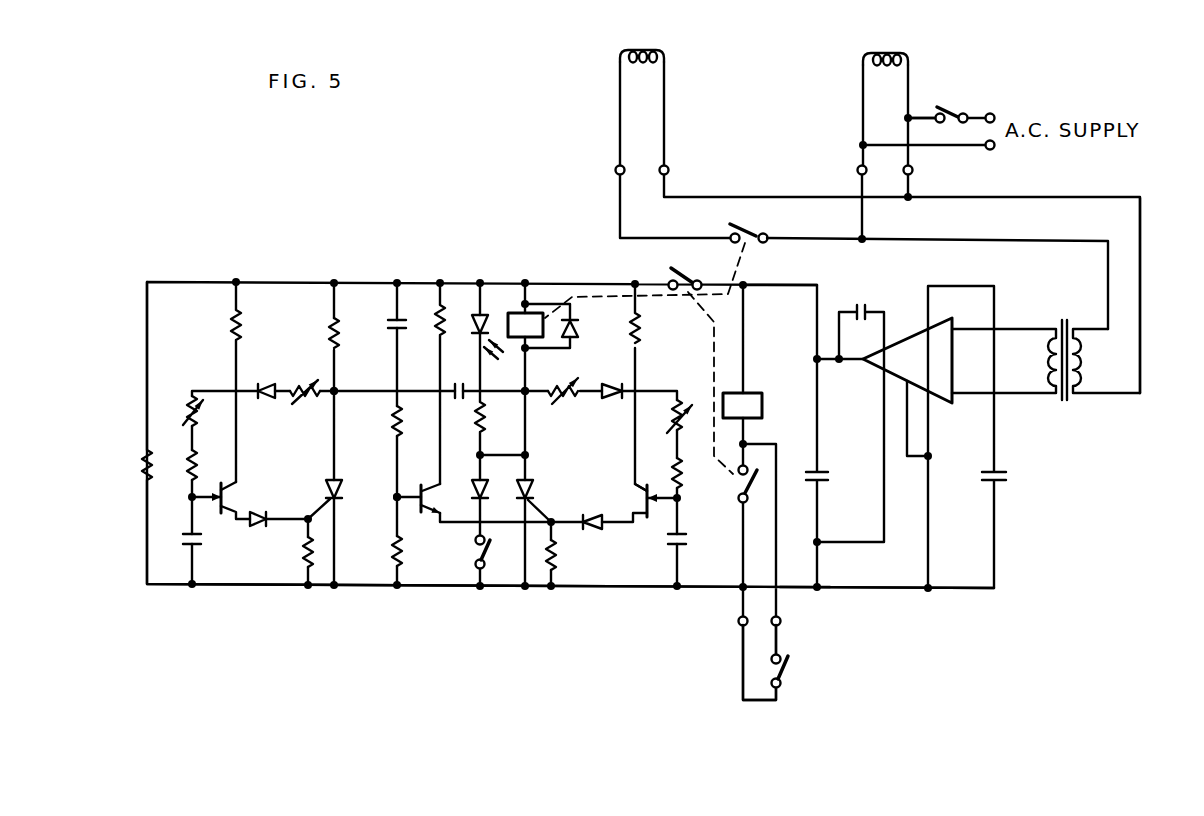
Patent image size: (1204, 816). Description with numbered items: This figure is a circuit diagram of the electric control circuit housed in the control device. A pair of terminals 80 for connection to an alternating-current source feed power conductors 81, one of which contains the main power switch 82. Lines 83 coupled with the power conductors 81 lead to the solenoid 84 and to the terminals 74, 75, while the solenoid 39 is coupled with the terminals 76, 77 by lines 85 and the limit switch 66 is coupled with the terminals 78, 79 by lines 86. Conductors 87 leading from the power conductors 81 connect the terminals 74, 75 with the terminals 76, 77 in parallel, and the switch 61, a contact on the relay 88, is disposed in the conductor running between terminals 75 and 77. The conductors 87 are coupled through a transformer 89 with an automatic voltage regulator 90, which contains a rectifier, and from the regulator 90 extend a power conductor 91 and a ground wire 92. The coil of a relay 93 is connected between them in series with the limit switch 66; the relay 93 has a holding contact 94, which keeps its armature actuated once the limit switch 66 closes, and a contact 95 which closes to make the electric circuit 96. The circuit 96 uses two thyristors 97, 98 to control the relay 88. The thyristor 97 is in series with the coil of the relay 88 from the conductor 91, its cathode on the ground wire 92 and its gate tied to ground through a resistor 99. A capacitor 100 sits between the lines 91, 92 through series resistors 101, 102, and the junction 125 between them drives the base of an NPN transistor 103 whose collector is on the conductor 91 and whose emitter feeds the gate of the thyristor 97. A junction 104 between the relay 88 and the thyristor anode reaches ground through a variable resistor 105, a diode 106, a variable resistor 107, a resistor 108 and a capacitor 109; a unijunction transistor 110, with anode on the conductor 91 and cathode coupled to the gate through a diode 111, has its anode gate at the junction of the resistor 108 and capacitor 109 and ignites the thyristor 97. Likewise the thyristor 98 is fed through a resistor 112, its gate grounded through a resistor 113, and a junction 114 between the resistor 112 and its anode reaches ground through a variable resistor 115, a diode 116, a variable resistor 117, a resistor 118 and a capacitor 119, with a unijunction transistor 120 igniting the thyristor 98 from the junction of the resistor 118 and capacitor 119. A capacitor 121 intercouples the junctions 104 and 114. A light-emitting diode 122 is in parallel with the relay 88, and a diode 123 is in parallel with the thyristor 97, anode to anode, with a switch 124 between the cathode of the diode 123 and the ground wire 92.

The solenoid 39 is at (651, 49).
The solenoid 84 is at (887, 52).
The lines 85 is at (663, 98).
The lines 83 is at (907, 98).
The main power switch 82 is at (953, 112).
The terminals 80 is at (994, 149).
The power conductors 81 is at (950, 147).
The terminal 77 is at (615, 171).
The terminal 76 is at (669, 171).
The terminal 75 is at (857, 171).
The terminal 74 is at (912, 171).
The switch 61 is at (748, 231).
The contact 95 is at (689, 278).
The power conductor 91 is at (783, 283).
The conductors 87 is at (1141, 250).
The relay 88 is at (536, 312).
The relay 93 is at (762, 405).
The holding contact 94 is at (754, 494).
The terminal 78 is at (738, 621).
The terminal 79 is at (781, 621).
The lines 86 is at (775, 642).
The limit switch 66 is at (789, 660).
The ground wire 92 is at (803, 589).
The automatic voltage regulator 90 is at (907, 360).
The transformer 89 is at (1064, 399).
The light-emitting diode 122 is at (478, 312).
The junction 104 is at (527, 390).
The capacitor 121 is at (457, 383).
The variable resistor 105 is at (565, 400).
The diode 106 is at (612, 384).
The variable resistor 107 is at (681, 400).
The resistor 108 is at (683, 470).
The capacitor 109 is at (686, 540).
The unijunction transistor 110 is at (648, 490).
The diode 111 is at (591, 516).
The thyristor 97 is at (532, 488).
The resistor 99 is at (563, 556).
The diode 123 is at (470, 487).
The switch 124 is at (499, 557).
The NPN type transistor 103 is at (431, 486).
The resistor 102 is at (411, 554).
The resistor 101 is at (412, 423).
The capacitor 100 is at (394, 319).
The junction 125 is at (395, 499).
The thyristor 98 is at (340, 483).
The resistor 113 is at (303, 556).
The unijunction transistor 120 is at (224, 496).
The capacitor 119 is at (182, 538).
The resistor 118 is at (189, 460).
The variable resistor 117 is at (189, 398).
The diode 116 is at (266, 397).
The variable resistor 115 is at (306, 384).
The junction 114 is at (337, 392).
The resistor 112 is at (332, 322).
The electric circuit 96 is at (385, 620).